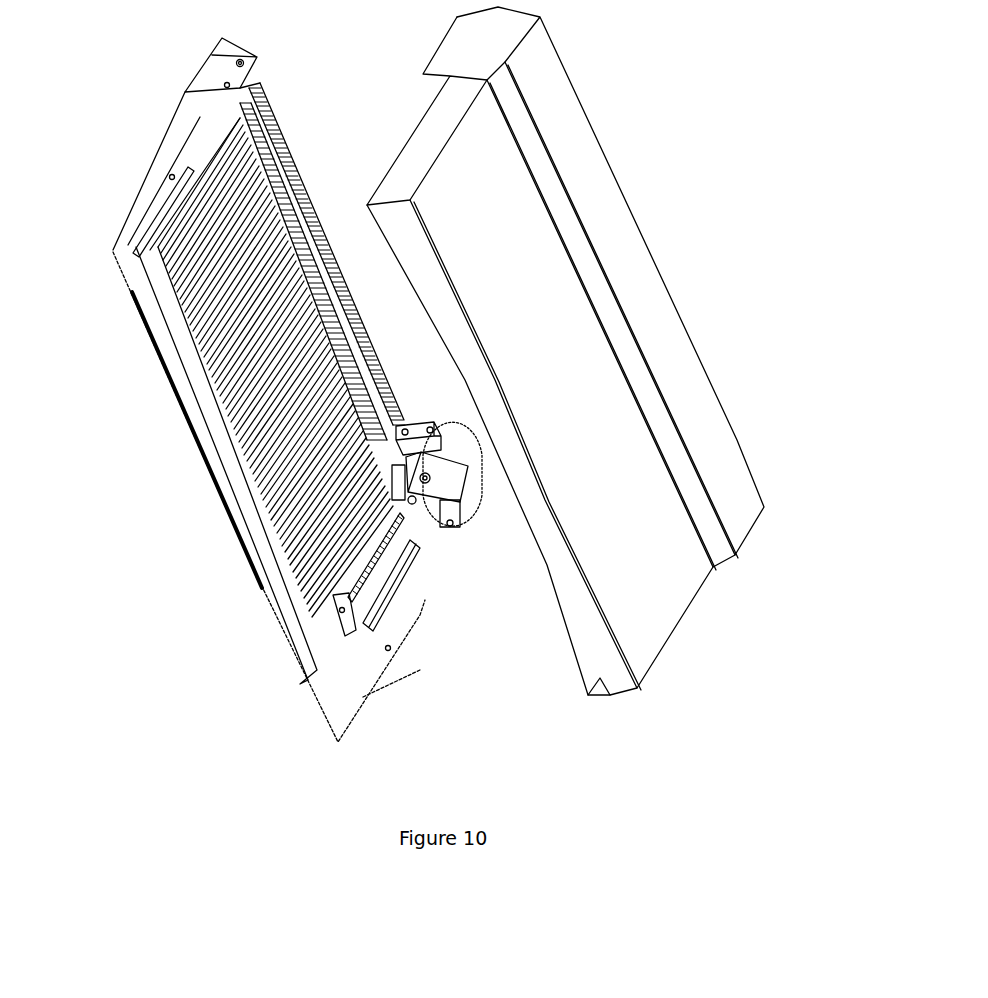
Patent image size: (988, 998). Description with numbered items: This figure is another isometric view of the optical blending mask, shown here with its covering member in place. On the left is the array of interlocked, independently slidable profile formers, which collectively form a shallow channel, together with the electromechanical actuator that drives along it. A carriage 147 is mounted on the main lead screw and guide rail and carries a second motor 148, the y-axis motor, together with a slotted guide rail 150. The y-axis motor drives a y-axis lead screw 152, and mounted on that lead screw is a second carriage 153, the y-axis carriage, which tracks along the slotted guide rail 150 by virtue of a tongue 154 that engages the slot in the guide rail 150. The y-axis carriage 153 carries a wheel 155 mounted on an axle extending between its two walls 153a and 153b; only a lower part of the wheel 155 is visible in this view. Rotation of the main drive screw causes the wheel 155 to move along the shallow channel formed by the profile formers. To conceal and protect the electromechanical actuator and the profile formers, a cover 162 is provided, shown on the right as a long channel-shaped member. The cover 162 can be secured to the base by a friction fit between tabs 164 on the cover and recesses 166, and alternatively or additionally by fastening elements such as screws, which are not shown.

The carriage 147 is at (432, 432).
The second motor 148 is at (462, 440).
The slotted guide rail 150 is at (373, 610).
The y-axis lead screw 152 is at (380, 557).
The second carriage 153 is at (423, 507).
The wall 153a is at (408, 482).
The wall 153b is at (403, 507).
The tongue 154 is at (410, 540).
The wheel 155 is at (390, 518).
The cover 162 is at (593, 172).
The tabs 164 is at (367, 197).
The recesses 166 is at (133, 220).